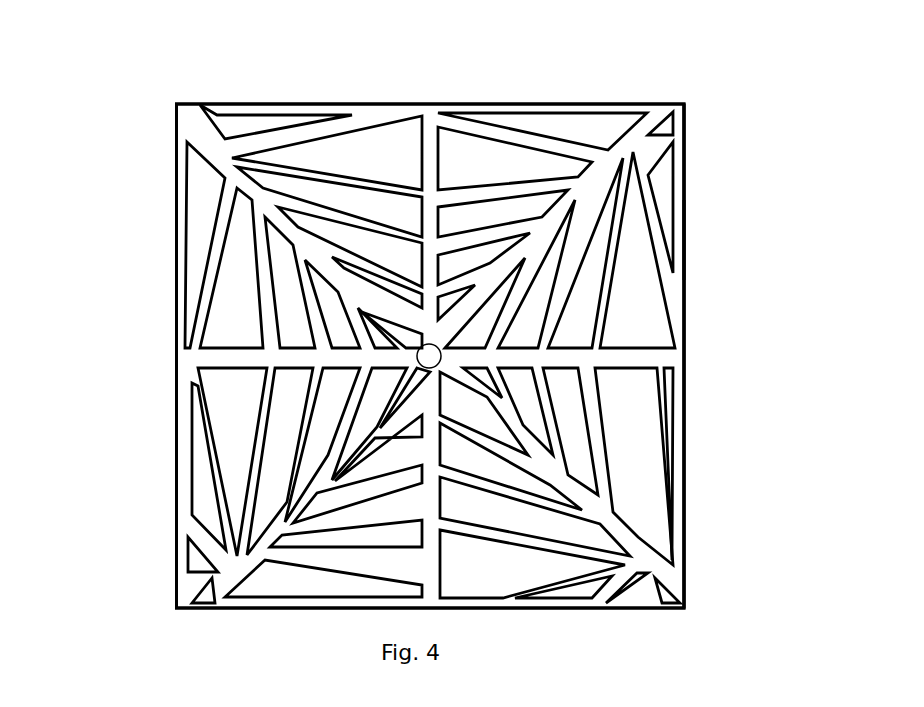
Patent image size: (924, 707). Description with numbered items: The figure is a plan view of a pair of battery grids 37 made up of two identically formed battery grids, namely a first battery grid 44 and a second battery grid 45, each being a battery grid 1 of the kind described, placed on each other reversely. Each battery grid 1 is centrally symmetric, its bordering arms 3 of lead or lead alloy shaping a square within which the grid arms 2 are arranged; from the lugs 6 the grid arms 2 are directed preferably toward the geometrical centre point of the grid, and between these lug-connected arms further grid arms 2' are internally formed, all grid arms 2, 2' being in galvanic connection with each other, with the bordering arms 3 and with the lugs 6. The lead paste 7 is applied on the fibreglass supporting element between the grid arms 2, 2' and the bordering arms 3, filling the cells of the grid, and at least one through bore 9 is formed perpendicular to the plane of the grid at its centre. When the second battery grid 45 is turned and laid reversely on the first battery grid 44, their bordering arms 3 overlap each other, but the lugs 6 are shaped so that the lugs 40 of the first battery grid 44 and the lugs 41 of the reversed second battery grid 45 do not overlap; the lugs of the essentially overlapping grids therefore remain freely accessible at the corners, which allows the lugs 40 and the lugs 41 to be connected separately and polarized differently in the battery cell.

The pair of battery grids 37 is at (92, 120).
The bordering arms 3 is at (553, 112).
The battery grid 1 is at (680, 147).
The first battery grid 44 is at (680, 235).
The second battery grid 45 is at (680, 147).
The lugs 6 is at (203, 104).
The lugs of the first battery grid 40 is at (666, 608).
The lugs of the reversed second battery grid 41 is at (685, 580).
The grid arms 2 is at (429, 379).
The further grid arms 2' is at (430, 356).
The lead paste 7 is at (607, 572).
The through bore 9 is at (420, 370).